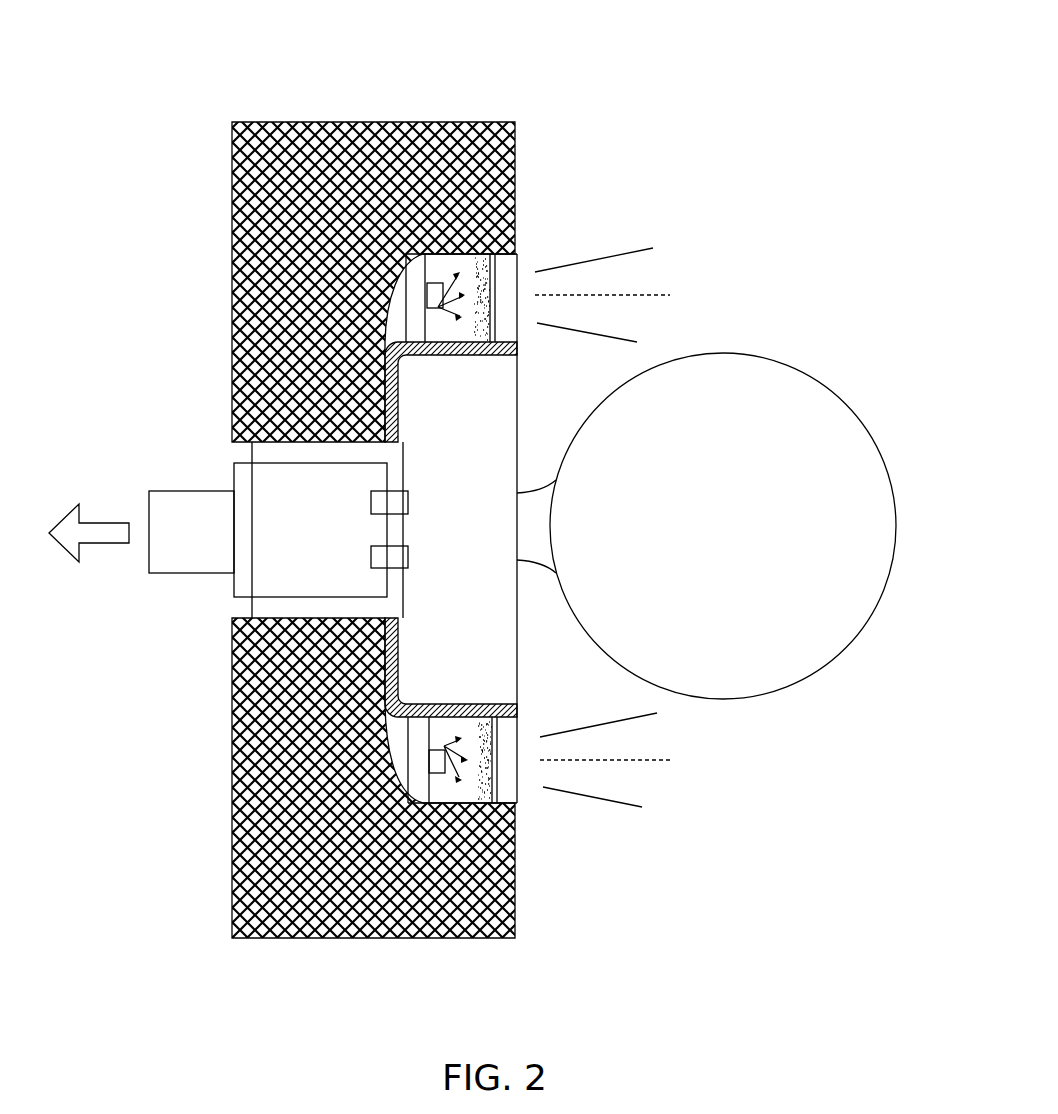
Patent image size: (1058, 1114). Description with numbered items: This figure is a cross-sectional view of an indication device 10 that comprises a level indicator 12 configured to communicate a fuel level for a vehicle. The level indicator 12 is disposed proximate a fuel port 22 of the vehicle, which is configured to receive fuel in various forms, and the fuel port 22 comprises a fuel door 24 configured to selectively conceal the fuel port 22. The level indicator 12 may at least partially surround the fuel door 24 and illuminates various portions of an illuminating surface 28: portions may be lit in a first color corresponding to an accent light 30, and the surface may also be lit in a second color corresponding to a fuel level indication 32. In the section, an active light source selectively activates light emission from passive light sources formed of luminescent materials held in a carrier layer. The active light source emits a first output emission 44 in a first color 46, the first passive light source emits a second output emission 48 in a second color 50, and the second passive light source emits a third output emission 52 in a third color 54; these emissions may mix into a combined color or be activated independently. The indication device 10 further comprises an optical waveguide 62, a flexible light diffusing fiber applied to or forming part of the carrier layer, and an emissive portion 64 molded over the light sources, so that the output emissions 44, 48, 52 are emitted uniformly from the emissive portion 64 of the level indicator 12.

The indication device 10 is at (281, 40).
The level indicator 12 is at (517, 256).
The fuel port 22 is at (773, 213).
The fuel door 24 is at (813, 420).
The illuminating surface 28 is at (539, 788).
The accent light 30 is at (517, 790).
The fuel level indication 32 is at (590, 718).
The first output emission 44 is at (706, 295).
The second output emission 48 is at (706, 295).
The third output emission 52 is at (690, 280).
The first color 46 is at (697, 760).
The second color 50 is at (697, 760).
The third color 54 is at (650, 735).
The optical waveguide 62 is at (518, 808).
The emissive portion 64 is at (505, 320).